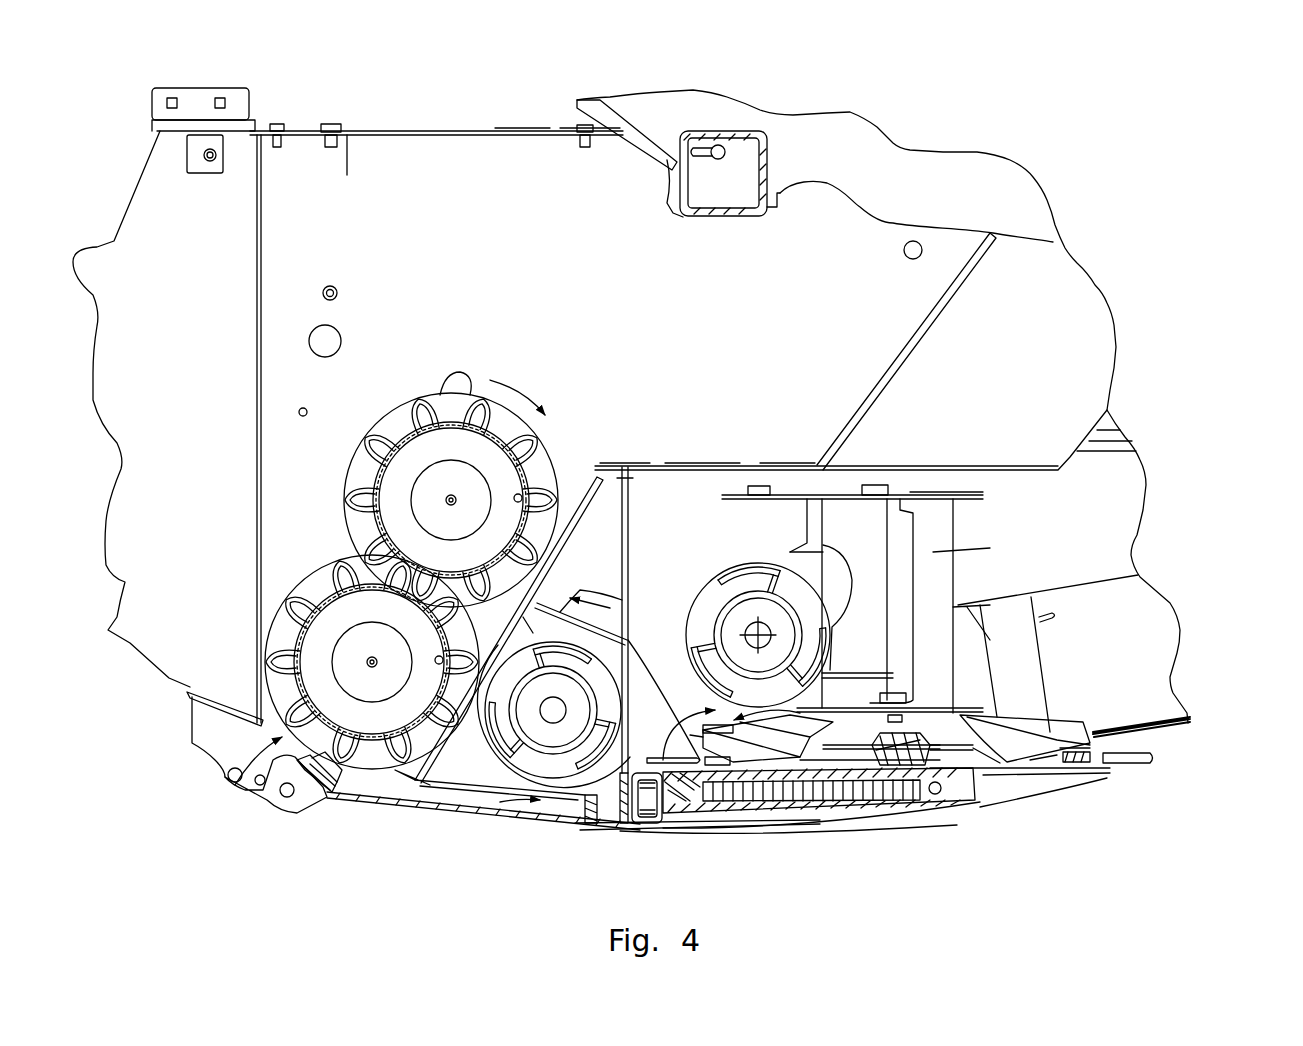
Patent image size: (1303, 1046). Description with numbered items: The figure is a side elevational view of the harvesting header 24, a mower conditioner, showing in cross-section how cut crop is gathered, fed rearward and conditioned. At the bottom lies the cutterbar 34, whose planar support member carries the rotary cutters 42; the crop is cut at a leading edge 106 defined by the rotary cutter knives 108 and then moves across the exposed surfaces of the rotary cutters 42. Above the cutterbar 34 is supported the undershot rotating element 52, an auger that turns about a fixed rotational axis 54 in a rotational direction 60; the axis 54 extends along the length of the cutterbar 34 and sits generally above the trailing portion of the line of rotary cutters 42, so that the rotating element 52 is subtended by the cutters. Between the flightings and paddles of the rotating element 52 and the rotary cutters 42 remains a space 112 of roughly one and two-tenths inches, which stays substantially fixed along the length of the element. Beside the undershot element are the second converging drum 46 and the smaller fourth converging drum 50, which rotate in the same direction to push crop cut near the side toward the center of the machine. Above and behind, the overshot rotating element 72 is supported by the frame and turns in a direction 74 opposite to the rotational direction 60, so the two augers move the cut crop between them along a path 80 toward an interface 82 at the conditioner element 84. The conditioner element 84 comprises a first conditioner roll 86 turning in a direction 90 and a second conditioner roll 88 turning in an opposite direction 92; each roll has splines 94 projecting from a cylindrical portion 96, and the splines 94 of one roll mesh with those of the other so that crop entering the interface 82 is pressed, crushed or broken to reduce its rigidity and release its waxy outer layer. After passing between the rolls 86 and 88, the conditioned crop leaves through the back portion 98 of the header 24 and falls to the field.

The harvesting header 24 is at (478, 122).
The cutterbar 34 is at (985, 812).
The rotary cutters 42 is at (1010, 740).
The second converging drum 46 is at (1000, 542).
The fourth converging drum 50 is at (848, 510).
The undershot rotating element 52 is at (708, 568).
The rotational axis 54 is at (766, 530).
The rotational direction 60 is at (853, 692).
The overshot rotating element 72 is at (490, 766).
The direction 74 is at (505, 780).
The path 80 is at (627, 510).
The interface 82 is at (416, 782).
The conditioner element 84 is at (320, 530).
The first conditioner roll 86 is at (235, 785).
The second conditioner roll 88 is at (345, 462).
The direction 90 is at (340, 782).
The direction 92 is at (518, 398).
The splines 94 is at (435, 392).
The cylindrical portion 96 is at (555, 475).
The back portion 98 is at (184, 478).
The leading edge 106 is at (1146, 783).
The rotary cutter knives 108 is at (1130, 755).
The space 112 is at (672, 785).